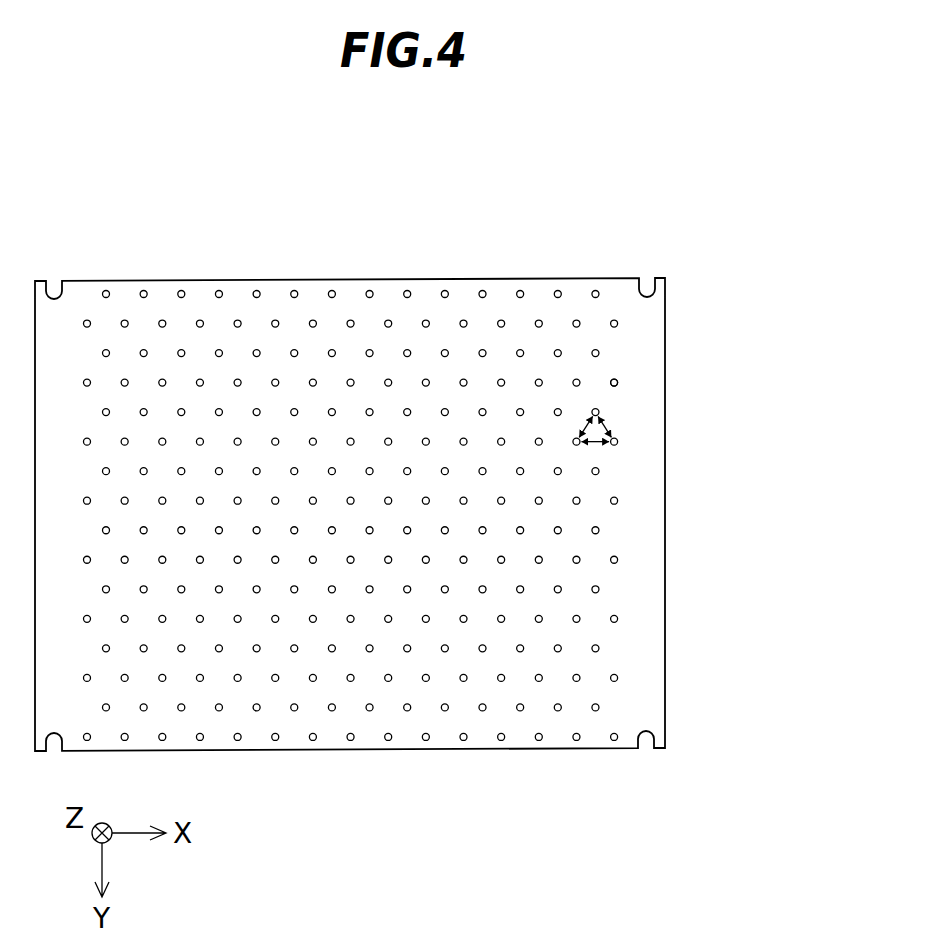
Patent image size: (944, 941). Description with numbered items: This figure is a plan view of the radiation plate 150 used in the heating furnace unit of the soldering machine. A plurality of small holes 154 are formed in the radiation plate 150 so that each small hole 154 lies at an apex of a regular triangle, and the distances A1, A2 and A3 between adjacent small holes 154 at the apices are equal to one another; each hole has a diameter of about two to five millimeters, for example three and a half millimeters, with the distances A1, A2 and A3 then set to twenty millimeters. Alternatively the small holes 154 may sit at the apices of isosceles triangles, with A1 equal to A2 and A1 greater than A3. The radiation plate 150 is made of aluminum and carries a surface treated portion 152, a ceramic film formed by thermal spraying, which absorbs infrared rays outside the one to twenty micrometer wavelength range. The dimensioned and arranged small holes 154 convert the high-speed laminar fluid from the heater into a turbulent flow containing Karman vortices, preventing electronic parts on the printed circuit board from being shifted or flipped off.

The radiation plate 150 is at (665, 579).
The surface treated portion 152 is at (643, 669).
The small hole 154 is at (618, 381).
The distance between adjacent small holes A1 is at (601, 421).
The distance between adjacent small holes A2 is at (592, 408).
The distance between adjacent small holes A3 is at (594, 443).